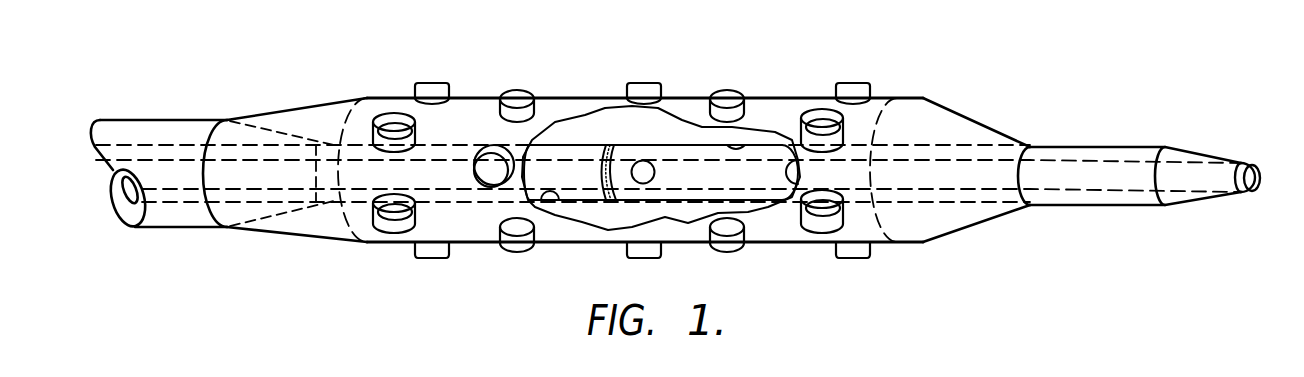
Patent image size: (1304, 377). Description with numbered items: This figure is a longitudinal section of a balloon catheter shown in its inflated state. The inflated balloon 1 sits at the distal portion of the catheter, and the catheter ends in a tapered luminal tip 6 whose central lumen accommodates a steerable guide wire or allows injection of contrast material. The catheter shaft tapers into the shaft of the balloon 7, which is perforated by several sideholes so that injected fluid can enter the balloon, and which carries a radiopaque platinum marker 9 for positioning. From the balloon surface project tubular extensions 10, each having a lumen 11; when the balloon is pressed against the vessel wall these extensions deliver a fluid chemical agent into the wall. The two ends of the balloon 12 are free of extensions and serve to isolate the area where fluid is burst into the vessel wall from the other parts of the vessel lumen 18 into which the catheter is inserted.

The inflated balloon 1 is at (780, 96).
The tapered luminal tip 6 is at (1199, 150).
The shaft of the balloon 7 is at (689, 145).
The radiopaque platinum marker 9 is at (603, 145).
The tubular extensions 10 is at (504, 108).
The lumen 11 is at (520, 93).
The ends of the balloon 12 is at (363, 97).
The vessel lumen 18 is at (273, 118).